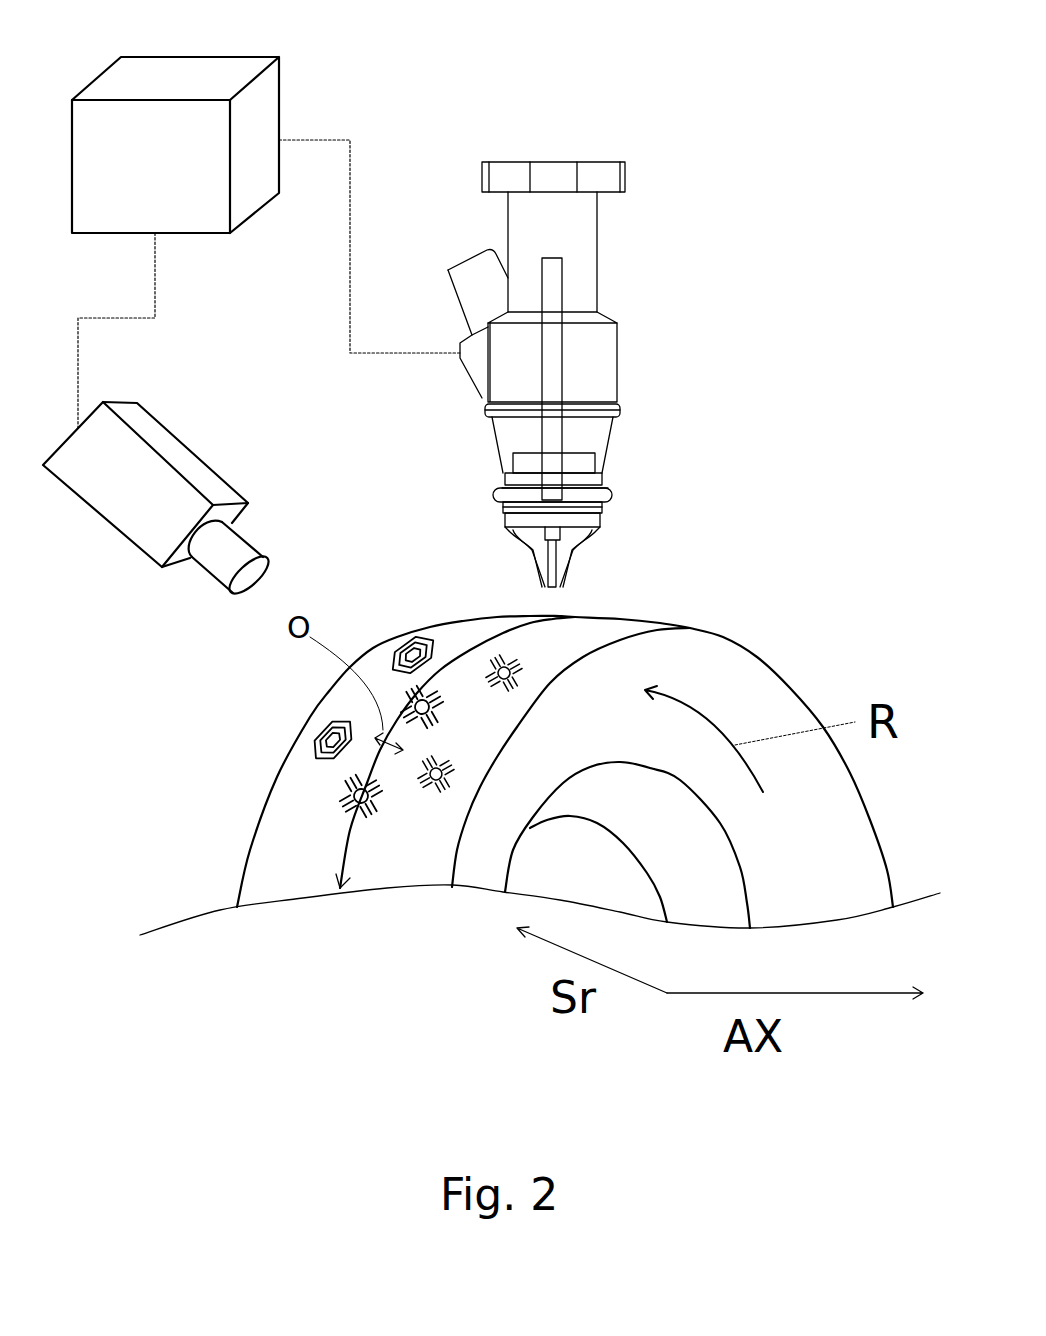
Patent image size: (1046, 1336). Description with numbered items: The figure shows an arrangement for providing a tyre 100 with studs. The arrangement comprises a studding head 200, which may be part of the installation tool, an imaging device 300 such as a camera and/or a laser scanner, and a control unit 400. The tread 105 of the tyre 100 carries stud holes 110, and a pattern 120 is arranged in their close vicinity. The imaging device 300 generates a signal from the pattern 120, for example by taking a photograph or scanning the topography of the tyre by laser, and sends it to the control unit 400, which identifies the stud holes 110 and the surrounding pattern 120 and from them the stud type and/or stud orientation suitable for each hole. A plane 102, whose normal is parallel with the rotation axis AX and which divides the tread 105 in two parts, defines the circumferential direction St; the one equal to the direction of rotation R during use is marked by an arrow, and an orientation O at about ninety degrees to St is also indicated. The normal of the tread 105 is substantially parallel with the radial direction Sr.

The tyre 100 is at (710, 662).
The plane 102 is at (340, 890).
The tread 105 is at (587, 614).
The stud holes 110 is at (333, 745).
The pattern 120 is at (400, 643).
The studding head 200 is at (602, 375).
The imaging device 300 is at (102, 487).
The control unit 400 is at (267, 92).